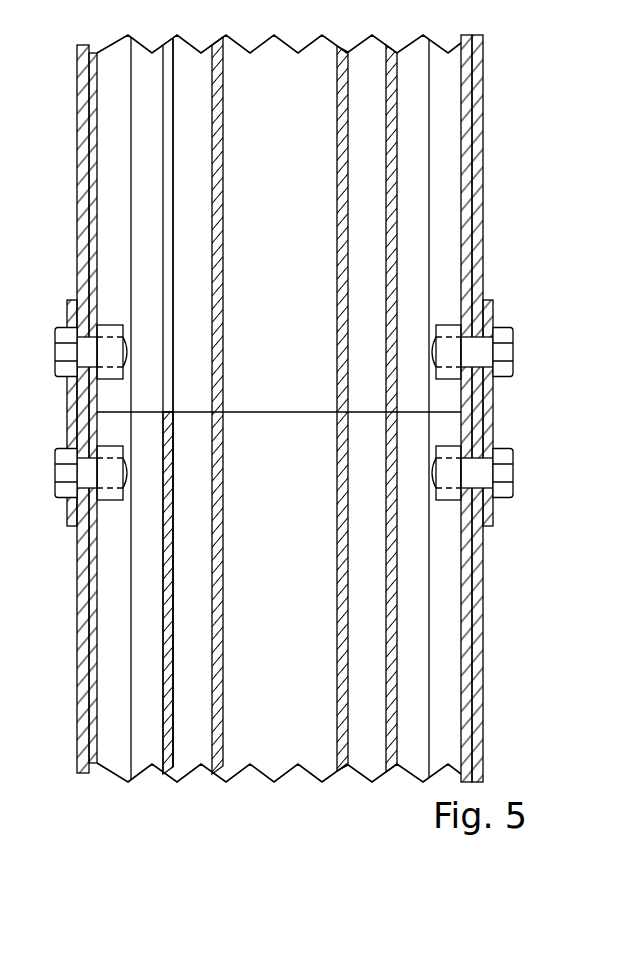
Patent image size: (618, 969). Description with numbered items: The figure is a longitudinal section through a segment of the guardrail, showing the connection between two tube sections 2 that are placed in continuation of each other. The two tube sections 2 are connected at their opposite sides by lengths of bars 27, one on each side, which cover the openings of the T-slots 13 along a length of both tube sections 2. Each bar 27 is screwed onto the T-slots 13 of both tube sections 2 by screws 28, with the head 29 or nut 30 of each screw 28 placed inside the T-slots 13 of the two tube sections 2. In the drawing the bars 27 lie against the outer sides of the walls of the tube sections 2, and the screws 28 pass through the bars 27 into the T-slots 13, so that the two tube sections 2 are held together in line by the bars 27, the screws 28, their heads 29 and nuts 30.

The tube section 2 is at (483, 180).
The T-slot 13 is at (455, 250).
The bar 27 is at (493, 303).
The screw 28 is at (513, 349).
The head 29 is at (513, 368).
The nut 30 is at (453, 342).